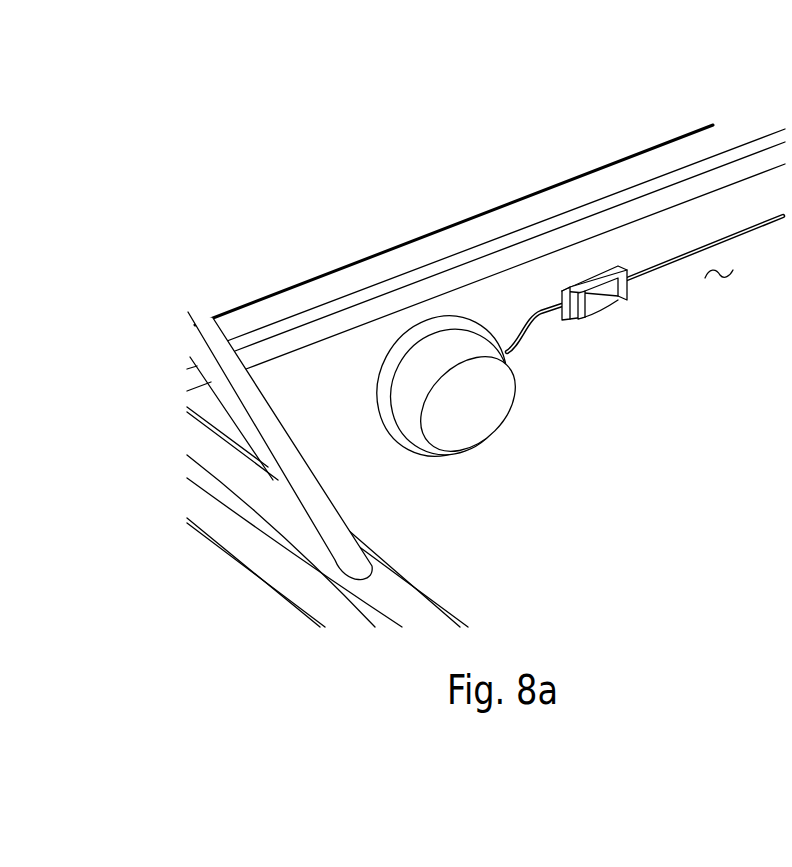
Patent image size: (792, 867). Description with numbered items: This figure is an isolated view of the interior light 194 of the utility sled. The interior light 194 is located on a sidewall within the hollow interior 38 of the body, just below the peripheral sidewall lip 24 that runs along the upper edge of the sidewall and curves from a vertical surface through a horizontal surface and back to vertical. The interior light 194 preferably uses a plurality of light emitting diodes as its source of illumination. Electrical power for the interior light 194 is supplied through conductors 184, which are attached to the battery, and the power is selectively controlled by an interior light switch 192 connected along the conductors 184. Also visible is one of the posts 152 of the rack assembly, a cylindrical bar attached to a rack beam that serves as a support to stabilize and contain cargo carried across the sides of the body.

The sidewall lip 24 is at (263, 313).
The hollow interior 38 is at (720, 267).
The post 152 is at (313, 509).
The conductors 184 is at (665, 260).
The interior light switch 192 is at (597, 280).
The interior light 194 is at (407, 340).